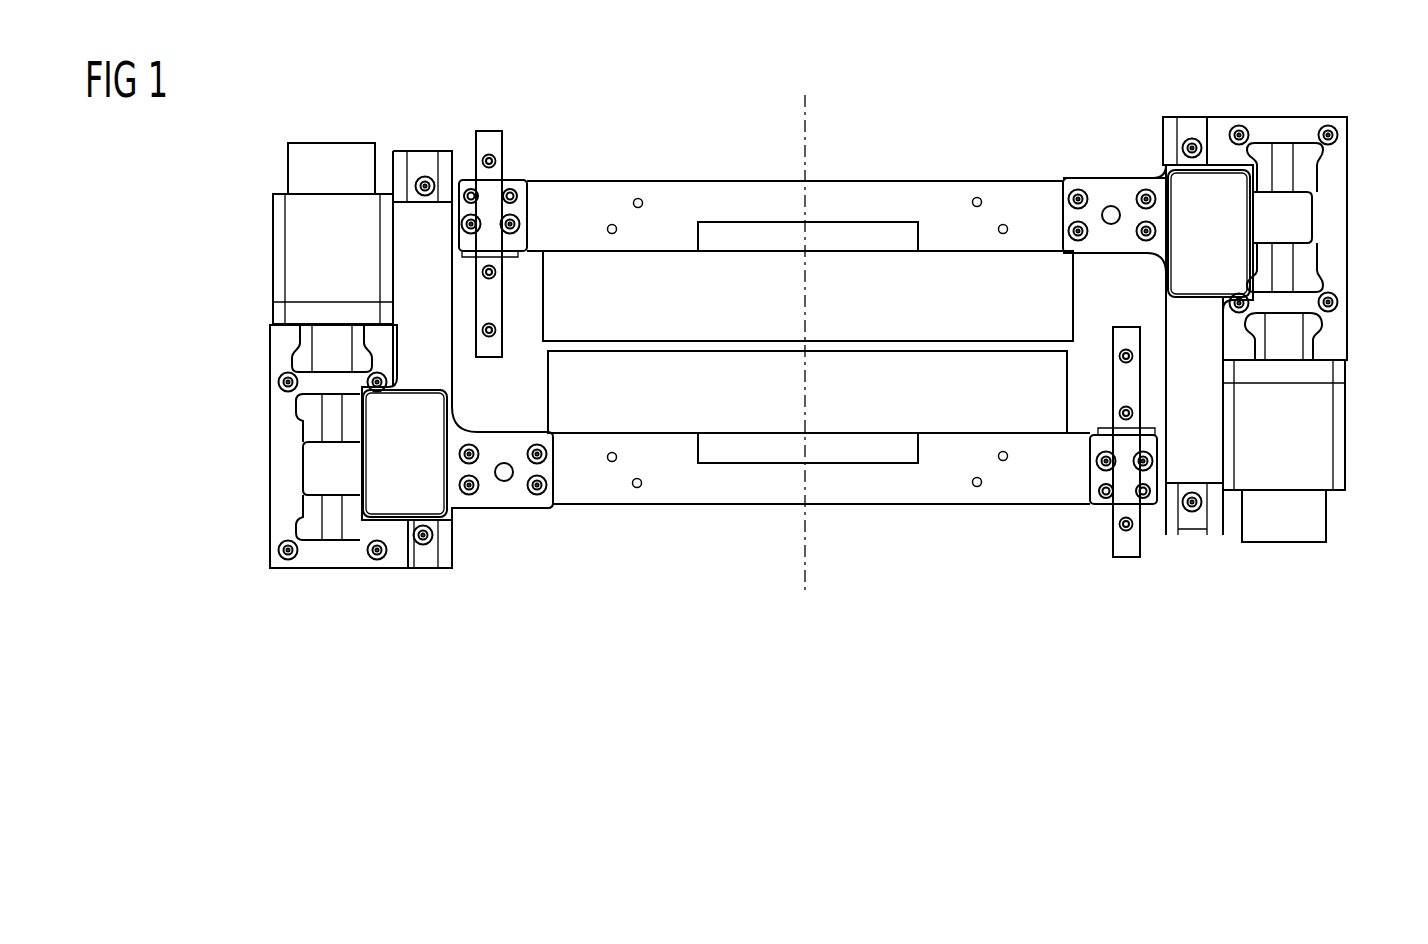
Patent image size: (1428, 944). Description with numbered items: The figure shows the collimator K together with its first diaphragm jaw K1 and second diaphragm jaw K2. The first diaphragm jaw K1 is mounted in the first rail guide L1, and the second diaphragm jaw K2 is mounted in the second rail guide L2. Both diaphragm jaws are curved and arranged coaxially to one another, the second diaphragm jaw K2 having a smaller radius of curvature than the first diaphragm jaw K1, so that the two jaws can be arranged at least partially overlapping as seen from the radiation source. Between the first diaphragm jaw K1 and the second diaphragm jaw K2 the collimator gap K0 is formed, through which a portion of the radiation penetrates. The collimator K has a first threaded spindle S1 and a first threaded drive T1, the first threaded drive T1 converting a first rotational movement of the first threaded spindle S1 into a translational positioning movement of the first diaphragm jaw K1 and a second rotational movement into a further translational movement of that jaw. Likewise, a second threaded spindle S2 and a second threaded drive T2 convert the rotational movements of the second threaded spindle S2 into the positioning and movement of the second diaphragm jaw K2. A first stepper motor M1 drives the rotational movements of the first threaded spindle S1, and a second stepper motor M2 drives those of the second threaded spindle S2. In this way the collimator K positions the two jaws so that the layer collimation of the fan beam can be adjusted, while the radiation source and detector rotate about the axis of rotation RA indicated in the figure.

The collimator K is at (187, 350).
The collimator gap K0 is at (668, 345).
The first diaphragm jaw K1 is at (748, 240).
The second diaphragm jaw K2 is at (750, 440).
The first rail guide L1 is at (488, 128).
The second rail guide L2 is at (432, 550).
The first stepper motor M1 is at (1305, 430).
The second stepper motor M2 is at (303, 240).
The first threaded spindle S1 is at (1287, 258).
The second threaded spindle S2 is at (328, 427).
The first threaded drive T1 is at (1285, 207).
The second threaded drive T2 is at (330, 480).
The axis of rotation RA is at (808, 580).